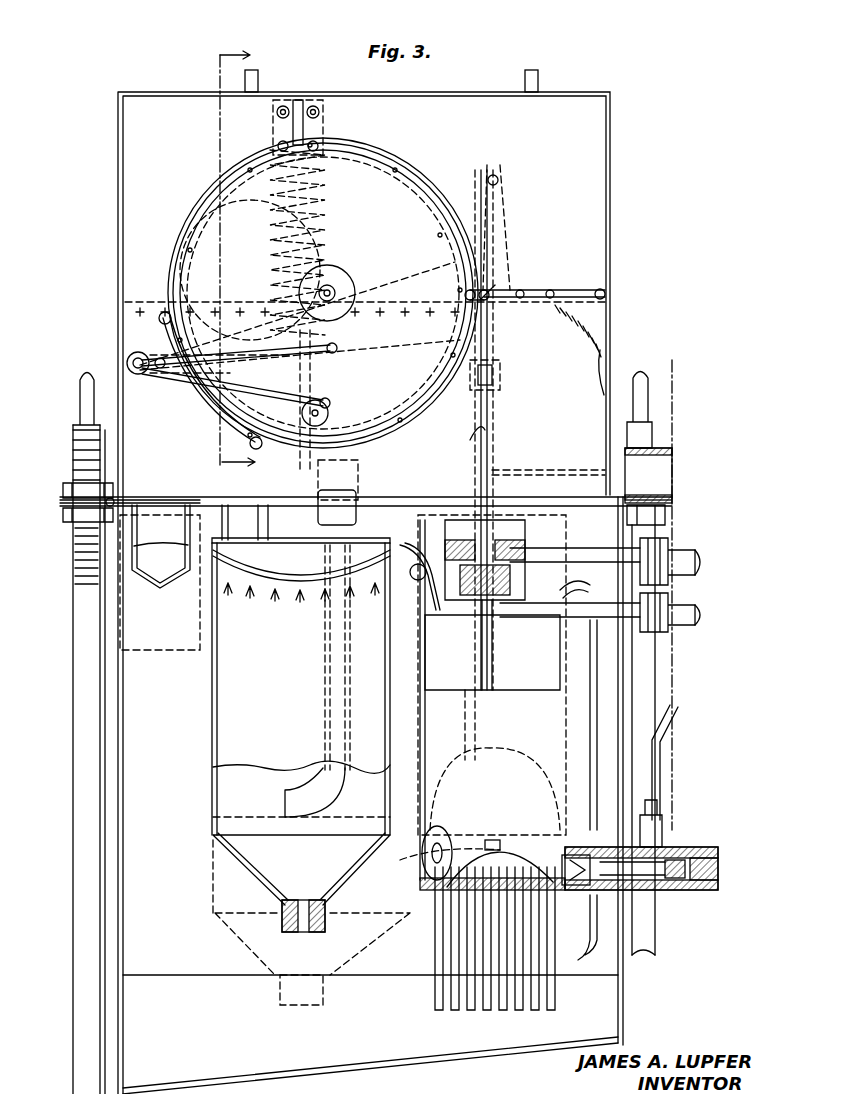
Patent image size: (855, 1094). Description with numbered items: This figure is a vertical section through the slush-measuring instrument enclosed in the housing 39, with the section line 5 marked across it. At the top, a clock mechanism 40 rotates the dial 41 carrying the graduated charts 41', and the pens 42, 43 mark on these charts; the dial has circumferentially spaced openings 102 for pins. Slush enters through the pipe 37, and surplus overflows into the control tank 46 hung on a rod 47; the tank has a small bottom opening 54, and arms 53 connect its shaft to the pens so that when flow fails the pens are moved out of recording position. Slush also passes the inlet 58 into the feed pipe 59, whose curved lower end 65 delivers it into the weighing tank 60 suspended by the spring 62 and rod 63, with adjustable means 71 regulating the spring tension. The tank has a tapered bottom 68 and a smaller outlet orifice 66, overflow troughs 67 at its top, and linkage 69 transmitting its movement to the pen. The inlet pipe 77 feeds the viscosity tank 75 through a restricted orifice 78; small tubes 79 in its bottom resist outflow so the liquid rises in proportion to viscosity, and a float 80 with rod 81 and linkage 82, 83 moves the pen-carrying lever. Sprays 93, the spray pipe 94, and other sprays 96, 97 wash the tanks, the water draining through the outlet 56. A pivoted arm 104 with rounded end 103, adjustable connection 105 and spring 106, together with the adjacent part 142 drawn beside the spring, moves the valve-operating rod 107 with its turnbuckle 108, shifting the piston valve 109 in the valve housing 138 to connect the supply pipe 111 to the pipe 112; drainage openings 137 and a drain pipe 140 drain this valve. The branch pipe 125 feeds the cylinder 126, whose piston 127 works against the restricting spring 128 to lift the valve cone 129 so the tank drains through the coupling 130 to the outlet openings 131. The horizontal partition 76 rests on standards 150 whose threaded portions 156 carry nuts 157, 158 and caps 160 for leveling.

The section line 5- 5 is at (250, 260).
The pipe 37 is at (655, 485).
The housing 39 is at (610, 256).
The clock mechanism 40 is at (250, 270).
The dial 41 is at (323, 290).
The charts 41' is at (337, 286).
The pen 42 is at (310, 370).
The pen 43 is at (325, 398).
The control tank 46 is at (80, 400).
The rod 47 is at (125, 352).
The levers or arms 53 is at (170, 340).
The opening 54 is at (155, 590).
The outlet 56 is at (128, 1060).
The inlet 58 is at (360, 468).
The feed pipe 59 is at (335, 533).
The weighing tank 60 is at (235, 748).
The spring 62 is at (330, 190).
The rod 63 is at (310, 465).
The curved lower end 65 is at (300, 790).
The outlet orifice 66 is at (303, 932).
The troughs 67 is at (232, 600).
The tapered bottom 68 is at (222, 875).
The linkage and levers 69 is at (340, 325).
The adjustable means 71 is at (323, 122).
The viscosity tank 75 is at (430, 880).
The horizontal partition 76 is at (60, 501).
The inlet pipe 77 is at (425, 455).
The restricted orifice 78 is at (425, 860).
The tubes 79 is at (556, 993).
The float 80 is at (528, 680).
The rod 81 is at (495, 398).
The linkage and levers 82 is at (510, 245).
The linkage and levers 83 is at (415, 380).
The sprays 93 is at (230, 515).
The spray pipe 94 is at (250, 526).
The sprays and jets 96 is at (355, 280).
The sprays and jets 97 is at (600, 710).
The openings 102 is at (398, 125).
The rounded end 103 is at (445, 262).
The arm 104 is at (562, 290).
The adjustable connection 105 is at (510, 275).
The spring 106 is at (583, 332).
The valve-operating rod 107 is at (478, 455).
The turnbuckle 108 is at (500, 380).
The piston valve 109 is at (597, 612).
The pipe 111 is at (690, 600).
The pipe 112 is at (540, 548).
The branch pipe 125 is at (670, 722).
The cylinder 126 is at (665, 848).
The piston 127 is at (660, 890).
The restricting spring 128 is at (690, 850).
The valve cone 129 is at (590, 855).
The coupling 130 is at (550, 850).
The outlet openings 131 is at (608, 900).
The drainage openings 137 is at (510, 540).
The valve housing 138 is at (495, 580).
The drain pipe 140 is at (492, 633).
The rack teeth 142 is at (565, 322).
The standards 150 is at (103, 820).
The screw-threaded portions 156 is at (73, 545).
The nut 157 is at (62, 515).
The nut 158 is at (65, 486).
The caps 160 is at (645, 398).